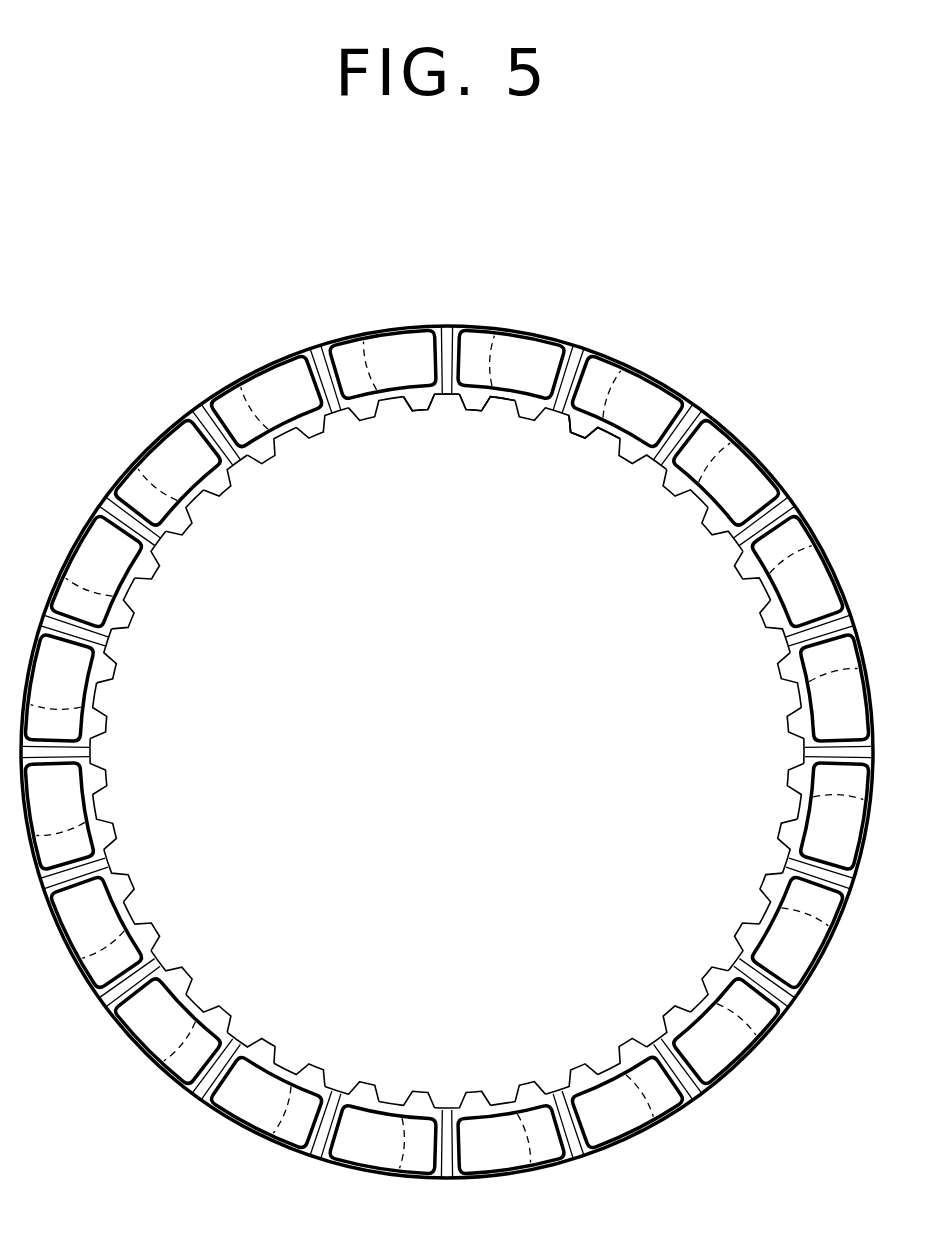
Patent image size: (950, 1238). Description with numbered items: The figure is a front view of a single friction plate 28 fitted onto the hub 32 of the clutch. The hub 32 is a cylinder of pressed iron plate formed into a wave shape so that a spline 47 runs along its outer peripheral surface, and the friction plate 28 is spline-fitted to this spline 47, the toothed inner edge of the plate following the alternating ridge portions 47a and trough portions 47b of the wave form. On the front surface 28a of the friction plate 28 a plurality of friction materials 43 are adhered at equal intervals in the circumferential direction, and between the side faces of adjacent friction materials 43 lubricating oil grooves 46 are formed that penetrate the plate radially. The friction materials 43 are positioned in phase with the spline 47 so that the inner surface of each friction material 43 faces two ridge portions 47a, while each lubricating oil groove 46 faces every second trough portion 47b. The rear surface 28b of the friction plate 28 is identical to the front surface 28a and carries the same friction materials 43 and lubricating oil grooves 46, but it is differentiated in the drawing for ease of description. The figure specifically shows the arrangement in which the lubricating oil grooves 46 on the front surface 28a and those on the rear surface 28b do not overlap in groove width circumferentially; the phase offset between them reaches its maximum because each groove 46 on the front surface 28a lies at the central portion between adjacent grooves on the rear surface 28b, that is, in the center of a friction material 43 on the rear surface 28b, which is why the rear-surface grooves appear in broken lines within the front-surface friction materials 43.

The friction plate 28 is at (322, 343).
The front surface 28a is at (437, 327).
The rear surface 28b is at (446, 1144).
The hub 32 is at (407, 400).
The friction material 43 is at (538, 350).
The lubricating oil groove 46 is at (587, 350).
The spline 47 is at (460, 395).
The ridge portion 47a is at (507, 395).
The trough portion 47b is at (577, 420).